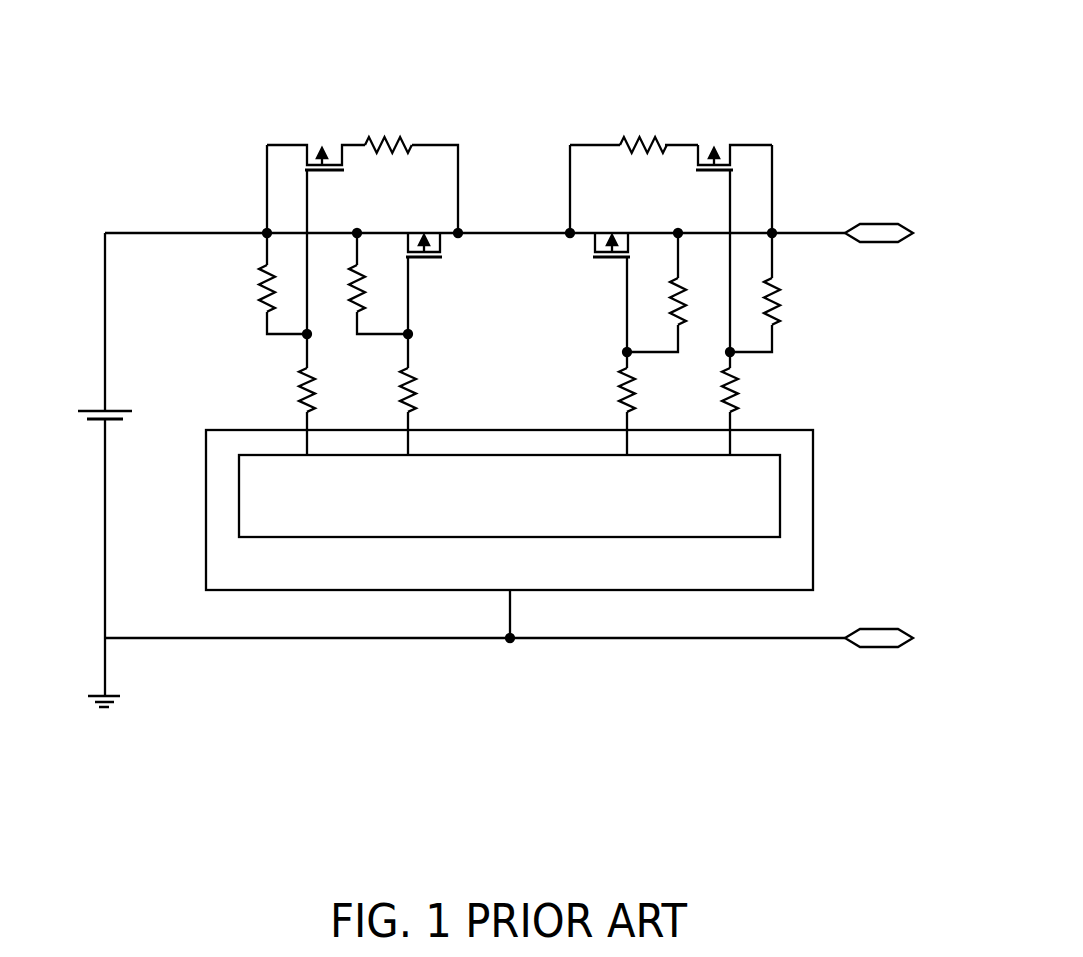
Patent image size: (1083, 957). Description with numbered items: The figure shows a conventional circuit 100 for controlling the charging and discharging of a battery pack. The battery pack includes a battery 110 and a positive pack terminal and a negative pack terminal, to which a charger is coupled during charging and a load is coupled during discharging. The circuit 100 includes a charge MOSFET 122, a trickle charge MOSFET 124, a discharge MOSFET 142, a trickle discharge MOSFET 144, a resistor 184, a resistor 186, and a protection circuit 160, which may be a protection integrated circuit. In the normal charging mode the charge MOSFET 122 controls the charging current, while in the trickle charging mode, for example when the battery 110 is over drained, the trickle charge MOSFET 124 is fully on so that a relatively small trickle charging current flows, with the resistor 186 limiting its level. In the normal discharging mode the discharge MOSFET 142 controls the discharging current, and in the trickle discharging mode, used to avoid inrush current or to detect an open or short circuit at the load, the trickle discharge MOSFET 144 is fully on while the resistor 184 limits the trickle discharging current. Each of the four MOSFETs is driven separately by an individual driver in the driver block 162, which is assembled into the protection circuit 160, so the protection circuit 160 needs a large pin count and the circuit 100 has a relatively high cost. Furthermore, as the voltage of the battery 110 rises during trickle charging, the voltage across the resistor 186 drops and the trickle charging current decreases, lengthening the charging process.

The conventional circuit 100 is at (185, 117).
The battery 110 is at (89, 409).
The charge MOSFET 122 is at (605, 265).
The trickle charge MOSFET 124 is at (720, 175).
The discharge MOSFET 142 is at (428, 265).
The trickle discharge MOSFET 144 is at (325, 174).
The protection circuit 160 is at (813, 471).
The driver block 162 is at (352, 538).
The resistor 184 is at (388, 138).
The resistor 186 is at (633, 139).